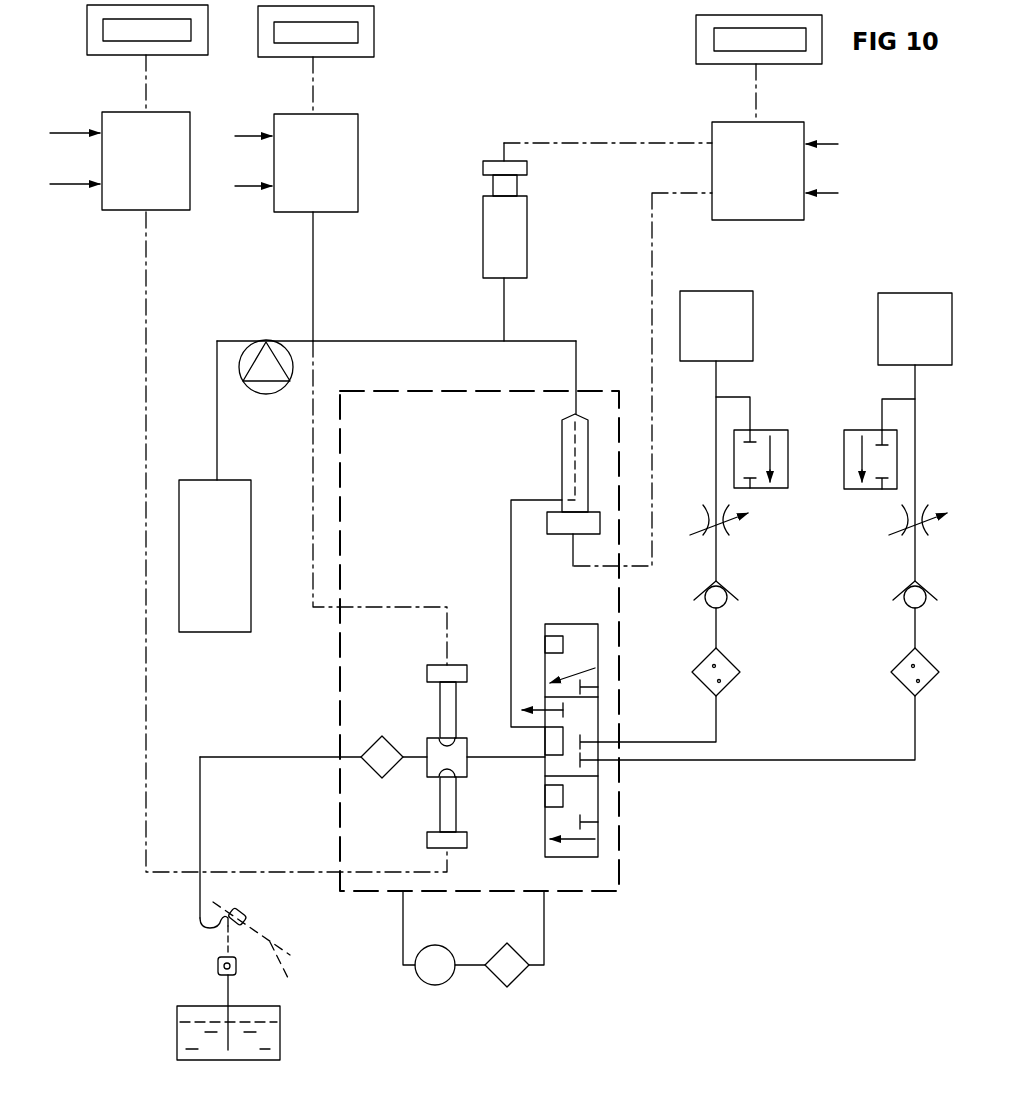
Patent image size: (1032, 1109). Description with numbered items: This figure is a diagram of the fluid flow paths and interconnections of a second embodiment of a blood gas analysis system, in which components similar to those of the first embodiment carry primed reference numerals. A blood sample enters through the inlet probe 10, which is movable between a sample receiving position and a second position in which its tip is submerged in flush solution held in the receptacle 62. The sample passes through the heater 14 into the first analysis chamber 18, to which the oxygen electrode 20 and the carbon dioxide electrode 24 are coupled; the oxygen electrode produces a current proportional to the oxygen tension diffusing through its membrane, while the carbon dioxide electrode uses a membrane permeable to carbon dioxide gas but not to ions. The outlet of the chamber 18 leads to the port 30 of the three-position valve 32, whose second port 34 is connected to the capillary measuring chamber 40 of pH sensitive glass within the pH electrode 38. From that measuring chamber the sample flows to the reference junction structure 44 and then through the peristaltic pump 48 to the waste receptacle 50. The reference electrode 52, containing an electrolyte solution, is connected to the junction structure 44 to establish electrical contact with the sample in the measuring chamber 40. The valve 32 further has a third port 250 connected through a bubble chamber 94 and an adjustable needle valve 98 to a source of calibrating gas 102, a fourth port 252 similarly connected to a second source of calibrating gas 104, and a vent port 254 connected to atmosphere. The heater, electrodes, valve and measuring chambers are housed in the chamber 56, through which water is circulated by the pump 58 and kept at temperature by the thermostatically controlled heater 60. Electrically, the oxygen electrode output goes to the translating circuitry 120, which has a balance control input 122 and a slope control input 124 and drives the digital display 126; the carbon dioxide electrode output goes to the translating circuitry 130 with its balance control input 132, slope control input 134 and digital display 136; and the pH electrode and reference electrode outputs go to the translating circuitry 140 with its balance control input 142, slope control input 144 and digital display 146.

The inlet probe 10 is at (229, 996).
The heater 14 is at (377, 740).
The first analysis chamber 18 is at (428, 772).
The PO2 electrode 20 is at (440, 710).
The PCO2 electrode 24 is at (440, 812).
The port 30 is at (545, 758).
The valve 32 is at (542, 825).
The second port 34 is at (545, 727).
The pH electrode 38 is at (562, 476).
The capillary measuring chamber 40 is at (572, 446).
The reference junction structure 44 is at (503, 341).
The peristaltic pump 48 is at (274, 393).
The waste receptacle 50 is at (214, 632).
The reference electrode 52 is at (527, 256).
The chamber 56 is at (338, 797).
The pump 58 is at (427, 985).
The thermostatically controlled heater 60 is at (500, 985).
The receptacle 62 is at (177, 1030).
The bubble chamber 94 is at (700, 657).
The adjustable needle valve 98 is at (708, 510).
The source of calibrating gas 102 is at (878, 334).
The second source of calibrating gas 104 is at (755, 316).
The translating circuitry 120 is at (338, 212).
The balance control input 122 is at (253, 135).
The slope control input 124 is at (256, 185).
The digital display 126 is at (374, 40).
The translating circuitry 130 is at (165, 210).
The balance control input 132 is at (78, 131).
The slope control input 134 is at (78, 183).
The digital display 136 is at (87, 40).
The translating circuitry 140 is at (776, 220).
The balance control input 142 is at (834, 193).
The slope control input 144 is at (828, 144).
The digital display 146 is at (696, 42).
The third port 250 is at (598, 760).
The fourth port 252 is at (598, 742).
The vent port 254 is at (545, 709).